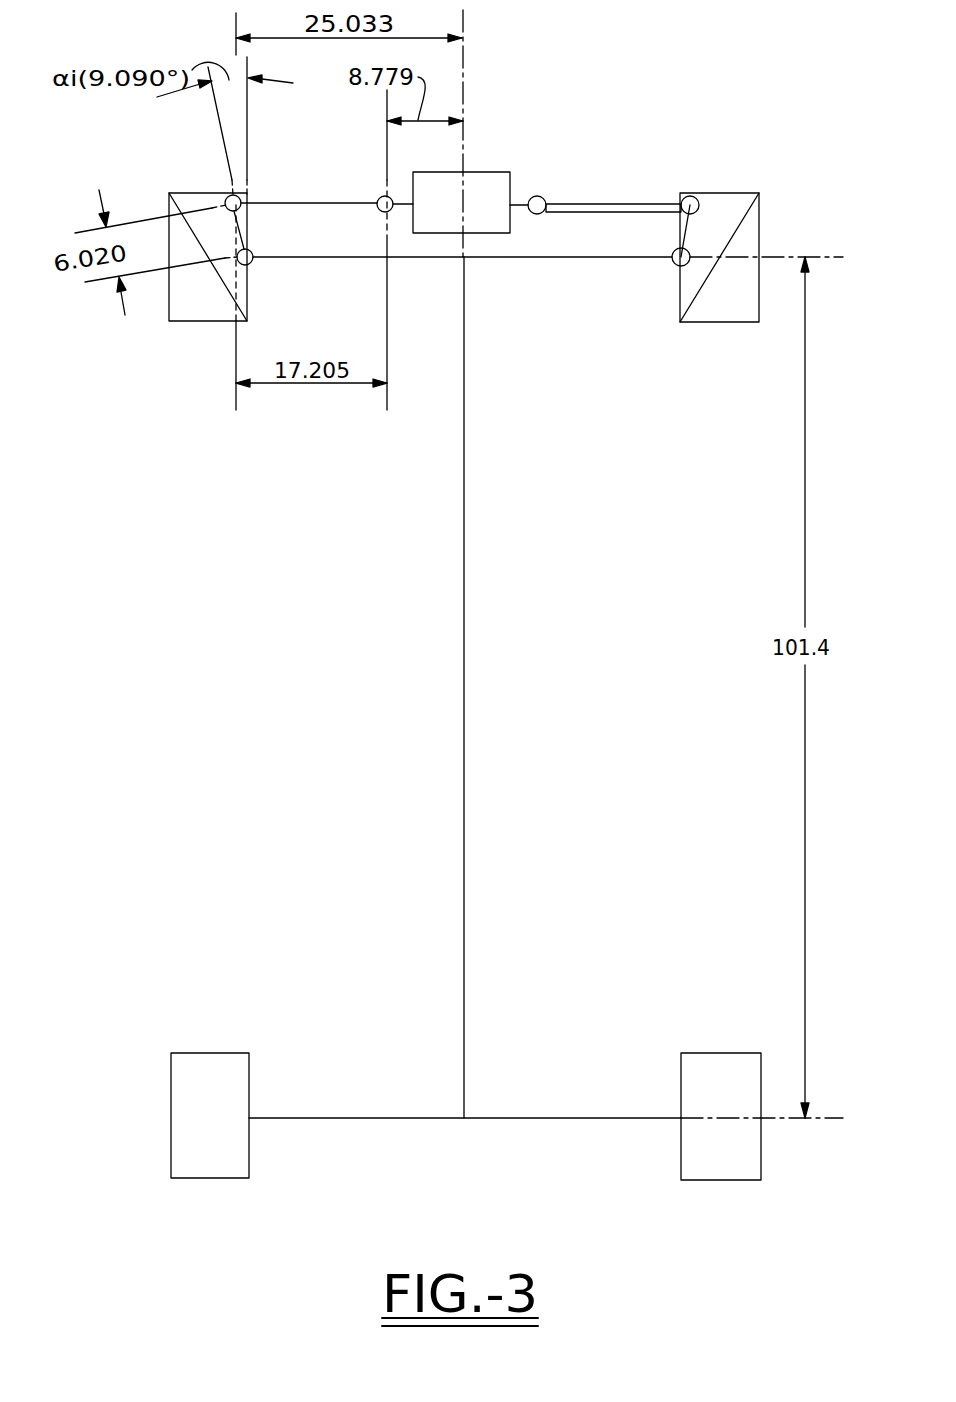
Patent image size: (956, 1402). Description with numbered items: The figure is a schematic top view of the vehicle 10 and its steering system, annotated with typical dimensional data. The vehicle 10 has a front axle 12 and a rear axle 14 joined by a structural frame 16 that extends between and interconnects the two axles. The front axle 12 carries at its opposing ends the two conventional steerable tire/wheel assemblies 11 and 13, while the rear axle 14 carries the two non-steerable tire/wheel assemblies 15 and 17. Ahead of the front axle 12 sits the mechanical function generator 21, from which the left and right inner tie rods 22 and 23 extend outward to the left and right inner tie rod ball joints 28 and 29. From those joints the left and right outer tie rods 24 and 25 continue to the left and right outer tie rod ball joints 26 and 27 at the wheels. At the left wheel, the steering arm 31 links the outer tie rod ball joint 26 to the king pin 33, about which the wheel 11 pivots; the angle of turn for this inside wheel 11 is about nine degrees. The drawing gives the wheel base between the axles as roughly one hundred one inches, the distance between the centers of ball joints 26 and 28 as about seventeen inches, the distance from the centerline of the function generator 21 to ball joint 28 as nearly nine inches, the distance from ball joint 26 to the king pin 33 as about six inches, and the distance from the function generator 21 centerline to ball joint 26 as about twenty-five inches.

The vehicle 10 is at (324, 1158).
The left front tire/wheel assembly 11 is at (200, 321).
The front axle 12 is at (547, 258).
The right front tire/wheel assembly 13 is at (708, 322).
The rear axle 14 is at (560, 1119).
The left rear tire/wheel assembly 15 is at (200, 1053).
The structural frame 16 is at (463, 598).
The right rear tire/wheel assembly 17 is at (715, 1053).
The mechanical function generator 21 is at (500, 172).
The left inner tie rod 22 is at (400, 205).
The right inner tie rod 23 is at (523, 207).
The left outer tie rod 24 is at (314, 202).
The right outer tie rod 25 is at (625, 204).
The left outer tie rod ball joint 26 is at (228, 196).
The right outer tie rod ball joint 27 is at (695, 198).
The left inner tie rod ball joint 28 is at (380, 196).
The right inner tie rod ball joint 29 is at (545, 198).
The left steering arm 31 is at (240, 227).
The king pin 33 is at (251, 262).